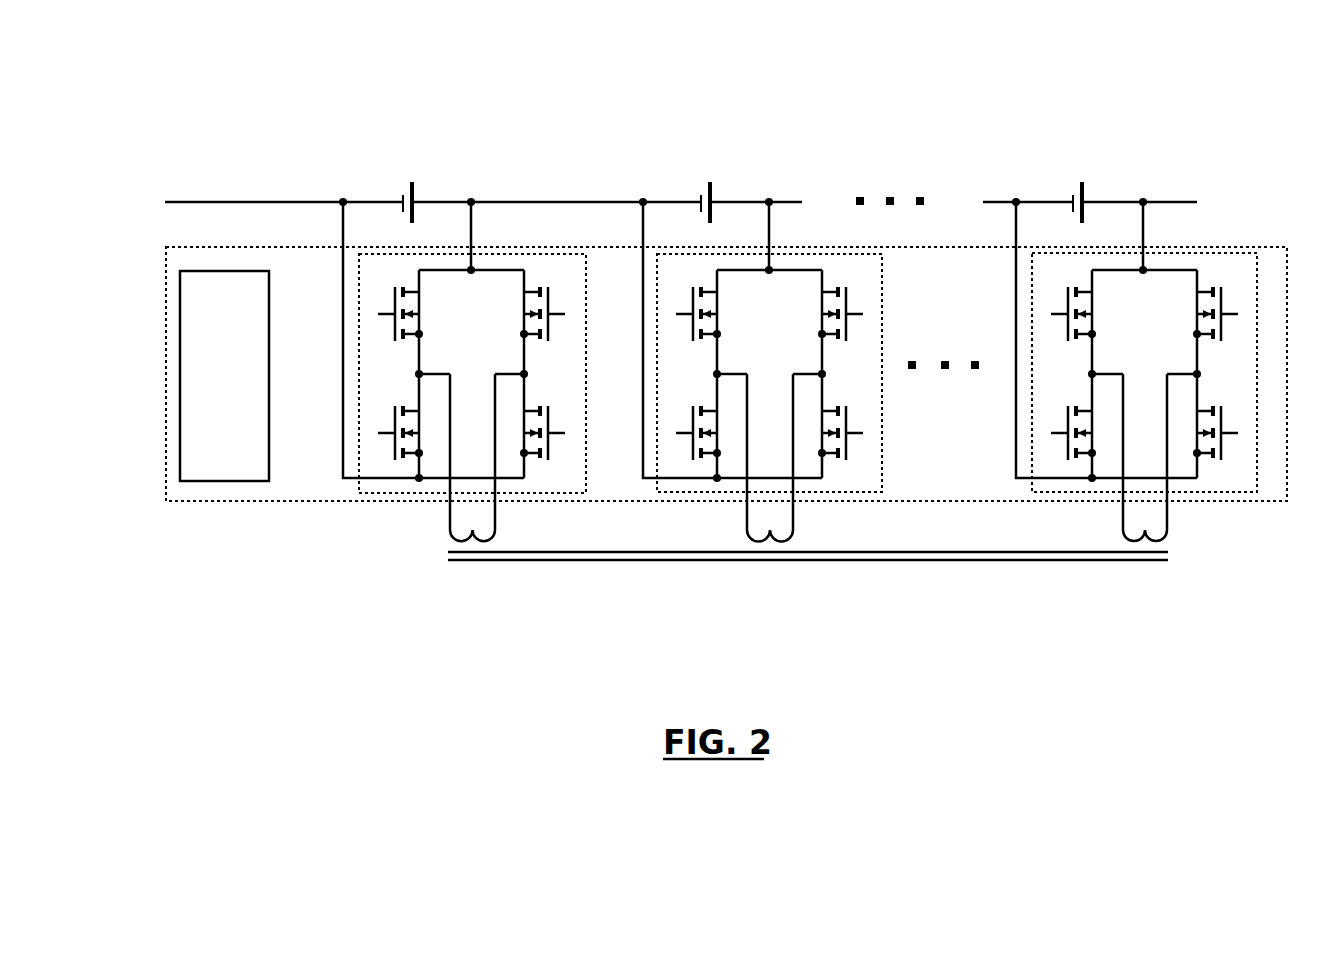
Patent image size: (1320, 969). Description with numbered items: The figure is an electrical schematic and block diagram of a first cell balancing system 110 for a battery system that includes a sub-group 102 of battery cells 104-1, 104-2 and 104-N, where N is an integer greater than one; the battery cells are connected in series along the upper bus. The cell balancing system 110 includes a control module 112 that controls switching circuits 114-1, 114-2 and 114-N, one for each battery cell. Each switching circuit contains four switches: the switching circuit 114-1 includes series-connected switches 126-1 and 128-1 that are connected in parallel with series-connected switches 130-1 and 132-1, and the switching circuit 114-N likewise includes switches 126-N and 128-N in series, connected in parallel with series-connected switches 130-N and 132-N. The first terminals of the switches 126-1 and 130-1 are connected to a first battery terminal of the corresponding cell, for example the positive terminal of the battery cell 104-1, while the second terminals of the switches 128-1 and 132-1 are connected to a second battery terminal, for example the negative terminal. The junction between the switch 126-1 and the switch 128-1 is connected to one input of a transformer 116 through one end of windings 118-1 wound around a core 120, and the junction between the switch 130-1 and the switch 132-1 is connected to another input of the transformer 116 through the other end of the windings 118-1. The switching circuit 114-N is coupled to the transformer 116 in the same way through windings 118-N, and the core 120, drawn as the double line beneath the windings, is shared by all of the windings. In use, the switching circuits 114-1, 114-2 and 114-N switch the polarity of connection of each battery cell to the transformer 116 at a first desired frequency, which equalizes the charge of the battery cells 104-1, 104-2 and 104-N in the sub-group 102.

The sub-group 102 is at (197, 108).
The battery cell 104-1 is at (415, 193).
The battery cell 104-2 is at (713, 193).
The battery cell 104-N is at (1085, 193).
The cell balancing system 110 is at (200, 248).
The control module 112 is at (180, 353).
The switching circuit 114-1 is at (455, 369).
The switching circuit 114-2 is at (688, 500).
The switching circuit 114-N is at (1125, 369).
The transformer 116 is at (796, 507).
The windings 118-1 is at (441, 547).
The windings 118-N is at (1182, 539).
The core 120 is at (800, 563).
The switch 126-1 is at (380, 296).
The switch 128-1 is at (374, 412).
The switch 130-1 is at (541, 279).
The switch 132-1 is at (545, 481).
The switch 126-N is at (1050, 295).
The switch 128-N is at (1046, 410).
The switch 130-N is at (1216, 277).
The switch 132-N is at (1219, 480).